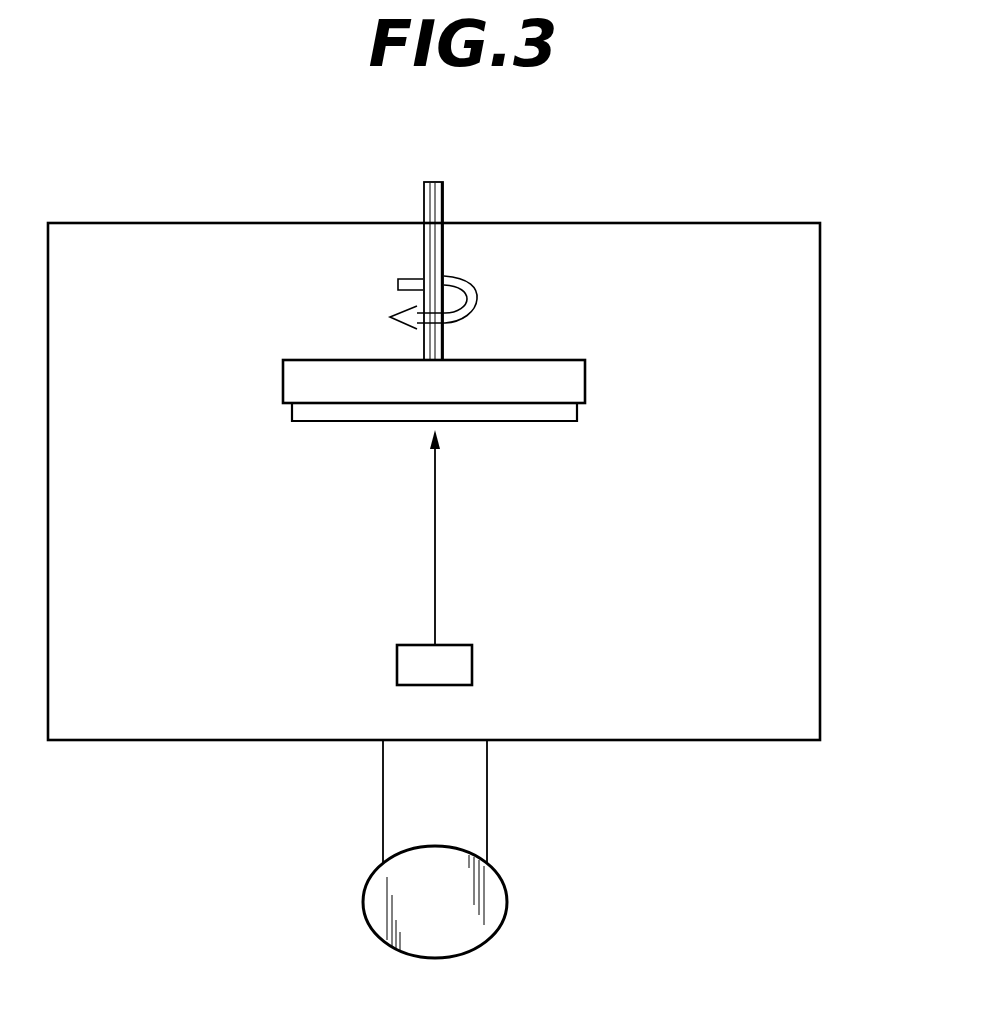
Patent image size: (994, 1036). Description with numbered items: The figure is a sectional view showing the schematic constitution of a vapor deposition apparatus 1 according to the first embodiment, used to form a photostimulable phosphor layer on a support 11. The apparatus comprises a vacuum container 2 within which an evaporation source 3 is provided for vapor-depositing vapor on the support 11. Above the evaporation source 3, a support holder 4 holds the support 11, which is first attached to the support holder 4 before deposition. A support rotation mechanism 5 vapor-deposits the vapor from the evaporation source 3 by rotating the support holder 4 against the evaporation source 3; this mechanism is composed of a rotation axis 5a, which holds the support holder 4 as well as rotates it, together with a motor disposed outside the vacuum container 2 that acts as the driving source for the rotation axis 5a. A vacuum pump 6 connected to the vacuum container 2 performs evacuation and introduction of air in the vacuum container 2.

The vapor deposition apparatus 1 is at (584, 194).
The vacuum container 2 is at (820, 352).
The evaporation source 3 is at (472, 661).
The support holder 4 is at (560, 353).
The support rotation mechanism 5 is at (462, 250).
The rotation axis 5a is at (425, 261).
The vacuum pump 6 is at (507, 900).
The support 11 is at (577, 410).